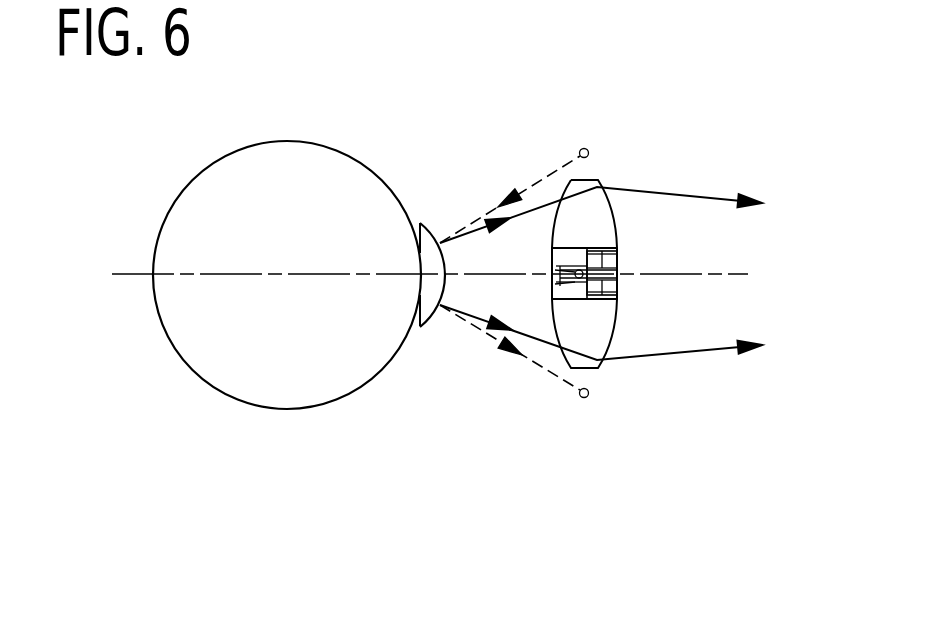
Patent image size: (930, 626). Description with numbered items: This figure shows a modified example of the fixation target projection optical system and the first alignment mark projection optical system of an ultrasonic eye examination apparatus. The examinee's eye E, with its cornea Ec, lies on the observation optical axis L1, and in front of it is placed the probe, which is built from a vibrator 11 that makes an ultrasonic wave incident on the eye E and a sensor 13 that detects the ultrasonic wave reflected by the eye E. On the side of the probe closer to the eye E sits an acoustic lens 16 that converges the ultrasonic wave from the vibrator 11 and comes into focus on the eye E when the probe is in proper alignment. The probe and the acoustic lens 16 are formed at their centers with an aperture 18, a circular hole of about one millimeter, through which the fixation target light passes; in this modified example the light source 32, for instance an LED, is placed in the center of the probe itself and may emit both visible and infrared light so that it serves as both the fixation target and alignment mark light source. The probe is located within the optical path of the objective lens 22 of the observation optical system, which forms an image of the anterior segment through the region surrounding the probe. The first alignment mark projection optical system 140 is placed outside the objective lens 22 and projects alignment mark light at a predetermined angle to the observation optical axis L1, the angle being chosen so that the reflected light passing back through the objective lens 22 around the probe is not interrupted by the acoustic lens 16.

The examinee's eye E is at (202, 171).
The cornea Ec is at (426, 230).
The observation optical axis L1 is at (692, 275).
The first alignment mark projection optical system 140 is at (580, 152).
The vibrator 11 is at (595, 290).
The sensor 13 is at (607, 260).
The acoustic lens 16 is at (568, 253).
The aperture 18 is at (560, 280).
The objective lens 22 is at (592, 328).
The light source 32 is at (588, 273).